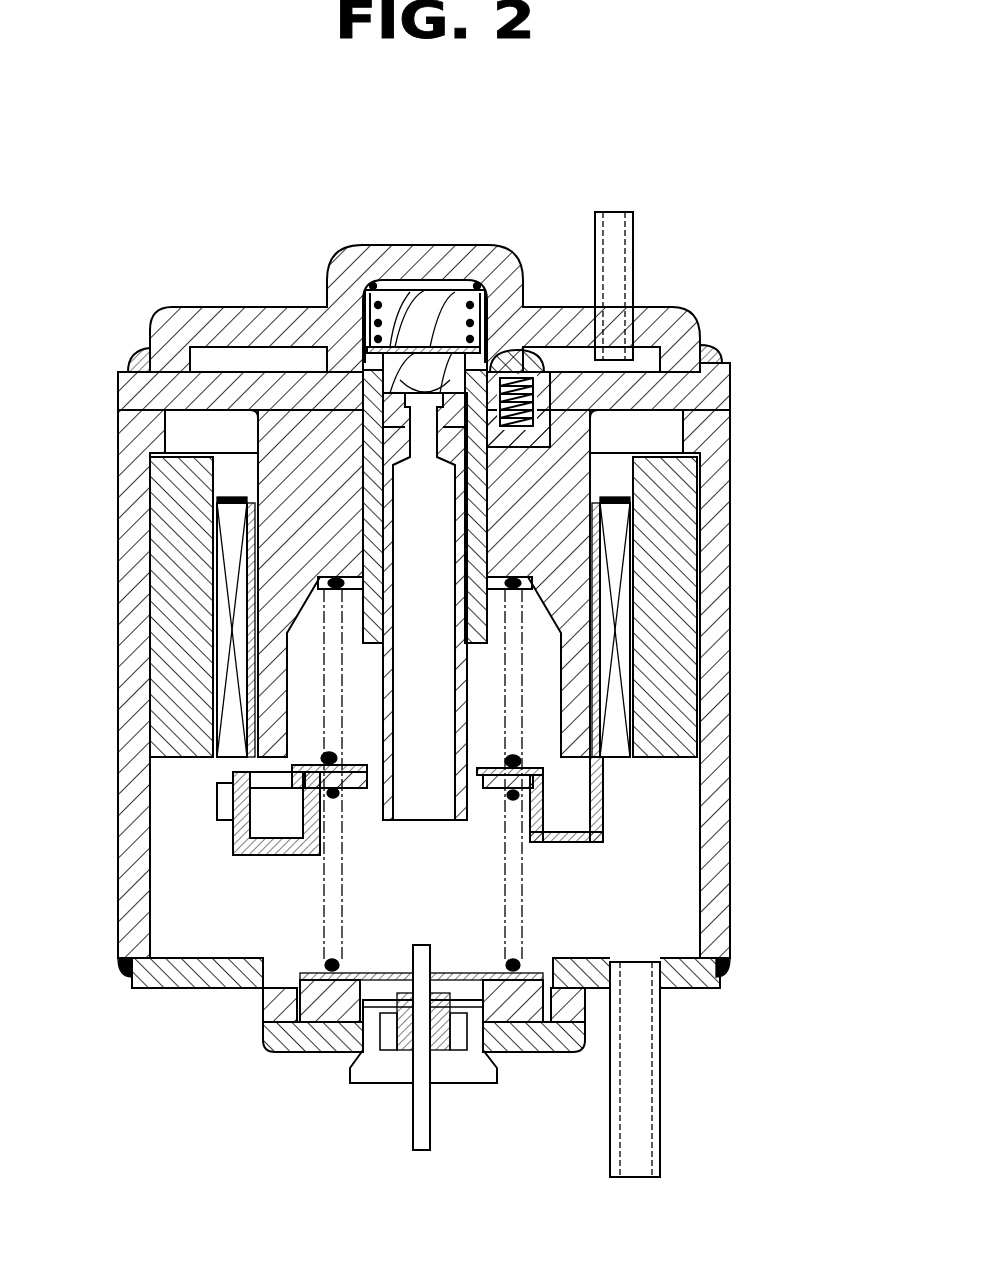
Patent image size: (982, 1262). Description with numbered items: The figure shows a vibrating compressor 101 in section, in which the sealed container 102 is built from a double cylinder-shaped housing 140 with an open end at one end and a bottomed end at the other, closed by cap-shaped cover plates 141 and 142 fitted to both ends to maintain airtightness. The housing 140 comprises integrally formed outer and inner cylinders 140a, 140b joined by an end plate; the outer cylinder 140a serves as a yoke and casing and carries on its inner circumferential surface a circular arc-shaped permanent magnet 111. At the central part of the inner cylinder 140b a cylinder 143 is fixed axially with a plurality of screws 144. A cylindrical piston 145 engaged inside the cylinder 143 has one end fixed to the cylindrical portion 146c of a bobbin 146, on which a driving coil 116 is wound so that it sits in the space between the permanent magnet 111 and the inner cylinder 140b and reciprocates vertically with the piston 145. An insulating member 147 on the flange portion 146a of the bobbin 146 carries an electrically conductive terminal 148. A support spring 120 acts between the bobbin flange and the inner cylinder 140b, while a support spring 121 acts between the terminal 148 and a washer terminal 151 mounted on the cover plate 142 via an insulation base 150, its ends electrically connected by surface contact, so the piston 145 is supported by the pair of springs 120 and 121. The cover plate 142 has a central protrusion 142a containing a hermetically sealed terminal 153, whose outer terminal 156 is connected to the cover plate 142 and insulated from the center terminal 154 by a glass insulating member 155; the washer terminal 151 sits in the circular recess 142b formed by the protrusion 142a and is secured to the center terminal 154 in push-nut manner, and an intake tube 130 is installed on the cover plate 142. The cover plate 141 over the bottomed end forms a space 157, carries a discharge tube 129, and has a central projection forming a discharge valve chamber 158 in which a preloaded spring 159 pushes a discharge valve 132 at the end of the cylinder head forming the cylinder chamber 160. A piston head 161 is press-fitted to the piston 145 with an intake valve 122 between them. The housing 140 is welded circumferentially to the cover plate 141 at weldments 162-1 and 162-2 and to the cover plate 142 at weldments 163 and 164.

The vibrating compressor 101 is at (742, 383).
The sealed container 102 is at (667, 892).
The permanent magnet 111 is at (680, 660).
The driving coil 116 is at (680, 712).
The support spring 120 is at (525, 795).
The support spring 121 is at (510, 892).
The intake valve 122 is at (465, 290).
The discharge tube 129 is at (617, 265).
The intake tube 130 is at (660, 1115).
The discharge valve 132 is at (413, 300).
The housing 140 is at (516, 607).
The outer cylinder 140a is at (730, 560).
The inner cylinder 140b is at (680, 600).
The cover plate 141 is at (213, 322).
The cover plate 142 is at (188, 977).
The protrusion 142a is at (522, 1048).
The circular recess 142b is at (550, 990).
The cylinder 143 is at (580, 435).
The screws 144 is at (510, 345).
The piston 145 is at (470, 730).
The bobbin 146 is at (603, 775).
The flange portion 146a is at (603, 835).
The cylindrical portion 146c is at (366, 805).
The insulating member 147 is at (291, 858).
The terminal 148 is at (248, 856).
The insulation base 150 is at (312, 1048).
The washer terminal 151 is at (377, 962).
The hermetically sealed terminal 153 is at (366, 1078).
The center terminal 154 is at (418, 1152).
The insulating member 155 is at (445, 1080).
The outer terminal 156 is at (490, 1088).
The space 157 is at (568, 357).
The discharge valve chamber 158 is at (395, 330).
The spring 159 is at (365, 310).
The cylinder chamber 160 is at (432, 340).
The piston head 161 is at (368, 300).
The weldment 162-1 is at (133, 355).
The weldment 162-2 is at (708, 352).
The weldment 163 is at (118, 978).
The weldment 164 is at (727, 980).